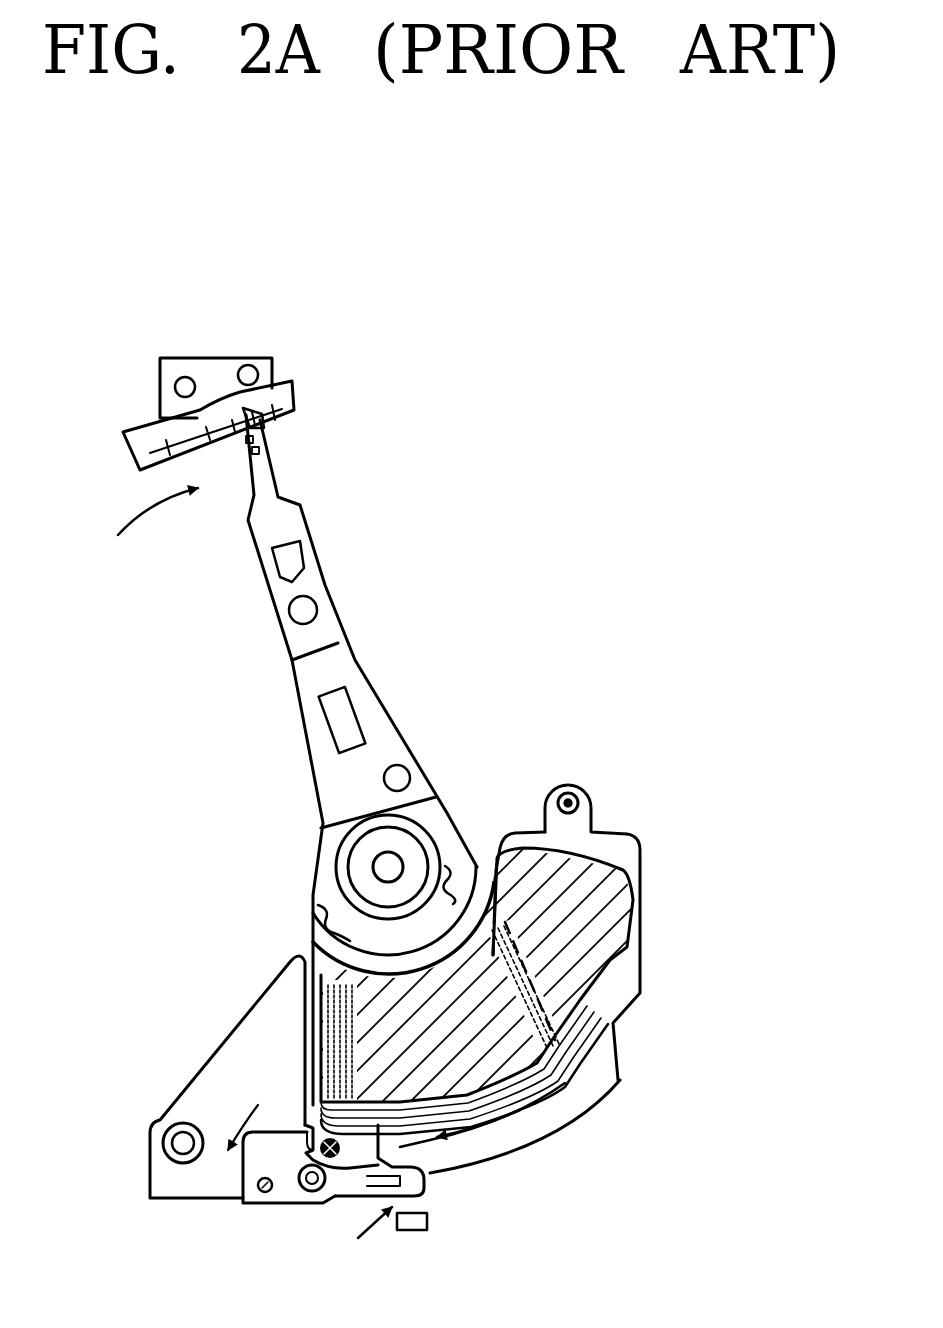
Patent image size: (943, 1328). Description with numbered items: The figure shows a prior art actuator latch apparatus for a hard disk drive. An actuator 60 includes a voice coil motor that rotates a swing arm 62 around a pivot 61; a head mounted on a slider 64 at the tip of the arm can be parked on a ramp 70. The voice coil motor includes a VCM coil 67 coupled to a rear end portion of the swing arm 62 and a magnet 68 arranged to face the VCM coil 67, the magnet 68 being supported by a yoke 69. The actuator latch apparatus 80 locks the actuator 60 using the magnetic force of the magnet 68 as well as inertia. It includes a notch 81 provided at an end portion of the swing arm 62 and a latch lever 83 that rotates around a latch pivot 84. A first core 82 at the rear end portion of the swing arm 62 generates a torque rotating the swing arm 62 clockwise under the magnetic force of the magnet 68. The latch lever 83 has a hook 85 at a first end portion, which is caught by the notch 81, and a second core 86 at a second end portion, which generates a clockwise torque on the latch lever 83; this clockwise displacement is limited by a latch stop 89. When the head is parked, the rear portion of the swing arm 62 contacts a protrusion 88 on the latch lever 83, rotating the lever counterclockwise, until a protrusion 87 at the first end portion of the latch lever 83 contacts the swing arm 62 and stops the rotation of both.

The actuator 60 is at (452, 770).
The pivot 61 is at (390, 865).
The swing arm 62 is at (370, 704).
The slider 64 is at (264, 453).
The VCM coil 67 is at (543, 1083).
The magnet 68 is at (623, 900).
The yoke 69 is at (623, 848).
The ramp 70 is at (178, 425).
The actuator latch apparatus 80 is at (440, 1195).
The notch 81 is at (307, 1097).
The first core 82 is at (297, 1100).
The latch lever 83 is at (277, 1207).
The latch pivot 84 is at (311, 1192).
The hook 85 is at (457, 1173).
The second core 86 is at (260, 1190).
The protrusion 87 is at (365, 1200).
The protrusion 88 is at (307, 1140).
The latch stop 89 is at (418, 1231).